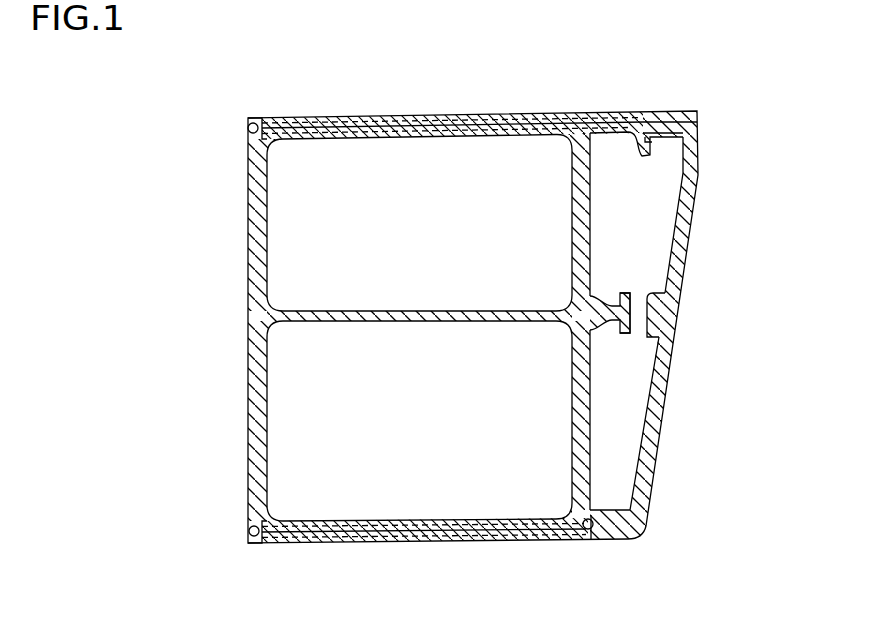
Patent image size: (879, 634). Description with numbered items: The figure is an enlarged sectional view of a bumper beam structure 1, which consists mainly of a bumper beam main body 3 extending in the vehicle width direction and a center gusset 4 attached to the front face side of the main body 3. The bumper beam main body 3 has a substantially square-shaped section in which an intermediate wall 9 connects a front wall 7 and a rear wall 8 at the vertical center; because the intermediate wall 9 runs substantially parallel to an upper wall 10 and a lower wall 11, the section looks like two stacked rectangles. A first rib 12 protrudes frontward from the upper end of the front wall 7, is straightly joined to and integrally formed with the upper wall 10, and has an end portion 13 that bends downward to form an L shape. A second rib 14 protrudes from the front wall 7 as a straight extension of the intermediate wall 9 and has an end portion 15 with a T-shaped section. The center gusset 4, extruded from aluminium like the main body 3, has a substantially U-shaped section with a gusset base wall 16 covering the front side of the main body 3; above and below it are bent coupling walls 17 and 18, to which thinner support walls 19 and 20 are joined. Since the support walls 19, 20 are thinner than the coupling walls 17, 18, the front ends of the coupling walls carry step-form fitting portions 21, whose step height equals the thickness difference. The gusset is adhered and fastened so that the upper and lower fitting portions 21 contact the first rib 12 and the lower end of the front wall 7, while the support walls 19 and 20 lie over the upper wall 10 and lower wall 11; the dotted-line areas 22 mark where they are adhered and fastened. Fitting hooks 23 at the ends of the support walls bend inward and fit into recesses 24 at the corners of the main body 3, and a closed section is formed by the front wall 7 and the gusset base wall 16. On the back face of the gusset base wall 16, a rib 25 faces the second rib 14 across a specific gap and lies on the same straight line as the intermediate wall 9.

The bumper beam structure 1 is at (699, 97).
The bumper beam main body 3 is at (234, 232).
The center gusset 4 is at (700, 258).
The front wall 7 is at (593, 456).
The rear wall 8 is at (248, 391).
The intermediate wall 9 is at (414, 322).
The upper wall 10 is at (418, 139).
The lower wall 11 is at (425, 520).
The first rib 12 is at (585, 135).
The end portion 13 is at (640, 155).
The second rib 14 is at (603, 318).
The end portion 15 is at (622, 334).
The gusset base wall 16 is at (700, 216).
The coupling wall 17 is at (672, 123).
The coupling wall 18 is at (610, 542).
The support wall 19 is at (446, 116).
The support wall 20 is at (443, 545).
The fitting portion 21 is at (683, 137).
The area 22 is at (354, 116).
The fitting hook 23 is at (248, 128).
The recess 24 is at (250, 118).
The rib 25 is at (667, 320).